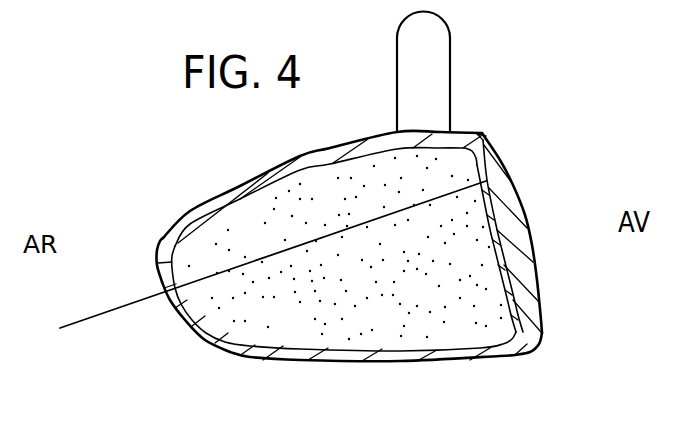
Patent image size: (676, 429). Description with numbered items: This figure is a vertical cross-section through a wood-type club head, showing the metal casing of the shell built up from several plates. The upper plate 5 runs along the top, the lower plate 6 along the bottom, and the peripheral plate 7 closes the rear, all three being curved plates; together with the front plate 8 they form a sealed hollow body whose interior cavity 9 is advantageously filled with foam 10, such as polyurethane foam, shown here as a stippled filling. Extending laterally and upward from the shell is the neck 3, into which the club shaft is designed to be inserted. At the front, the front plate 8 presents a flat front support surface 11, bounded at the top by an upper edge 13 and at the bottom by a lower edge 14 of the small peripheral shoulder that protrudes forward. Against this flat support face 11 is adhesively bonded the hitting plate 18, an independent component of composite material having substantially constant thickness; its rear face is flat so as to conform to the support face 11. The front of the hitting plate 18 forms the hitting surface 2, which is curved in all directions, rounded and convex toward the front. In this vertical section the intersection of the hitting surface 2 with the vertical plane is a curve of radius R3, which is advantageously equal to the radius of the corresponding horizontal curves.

The hitting surface 2 is at (497, 202).
The neck 3 is at (437, 55).
The upper plate 5 is at (304, 151).
The lower plate 6 is at (365, 352).
The peripheral plate 7 is at (160, 263).
The front plate 8 is at (504, 176).
The interior cavity 9 is at (207, 243).
The foam 10 is at (287, 328).
The front support surface 11 is at (530, 302).
The upper edge 13 is at (480, 134).
The lower edge 14 is at (536, 346).
The hitting plate 18 is at (524, 273).
The radius of vertical-plane intersection curves R3 is at (273, 254).